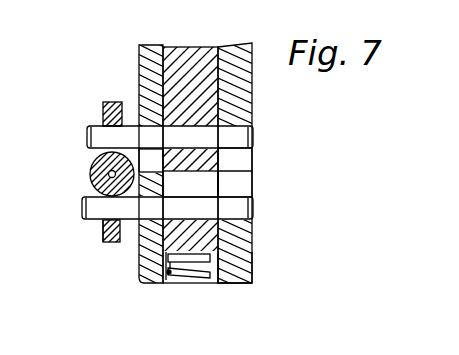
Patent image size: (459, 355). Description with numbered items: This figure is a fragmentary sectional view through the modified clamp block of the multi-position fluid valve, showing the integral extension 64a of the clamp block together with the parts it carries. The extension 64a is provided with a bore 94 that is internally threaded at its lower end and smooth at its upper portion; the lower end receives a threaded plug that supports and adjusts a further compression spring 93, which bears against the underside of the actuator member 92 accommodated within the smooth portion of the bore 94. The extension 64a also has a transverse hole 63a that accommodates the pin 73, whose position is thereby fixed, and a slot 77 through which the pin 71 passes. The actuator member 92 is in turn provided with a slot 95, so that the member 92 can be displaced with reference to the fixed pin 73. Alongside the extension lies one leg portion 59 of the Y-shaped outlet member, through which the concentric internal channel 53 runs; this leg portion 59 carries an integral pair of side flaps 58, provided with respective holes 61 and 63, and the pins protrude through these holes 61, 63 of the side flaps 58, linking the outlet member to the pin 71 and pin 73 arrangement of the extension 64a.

The actuator member 92 is at (210, 47).
The side flaps 58 is at (112, 102).
The hole 61 is at (102, 126).
The pin 71 is at (92, 137).
The leg portion 59 is at (92, 164).
The internal channel 53 is at (106, 177).
The pin 73 is at (83, 205).
The hole 63 is at (102, 226).
The transverse hole 63a is at (252, 237).
The extension 64a is at (252, 272).
The slot 77 is at (220, 186).
The slot 95 is at (196, 188).
The compression spring 93 is at (182, 275).
The bore 94 is at (212, 277).